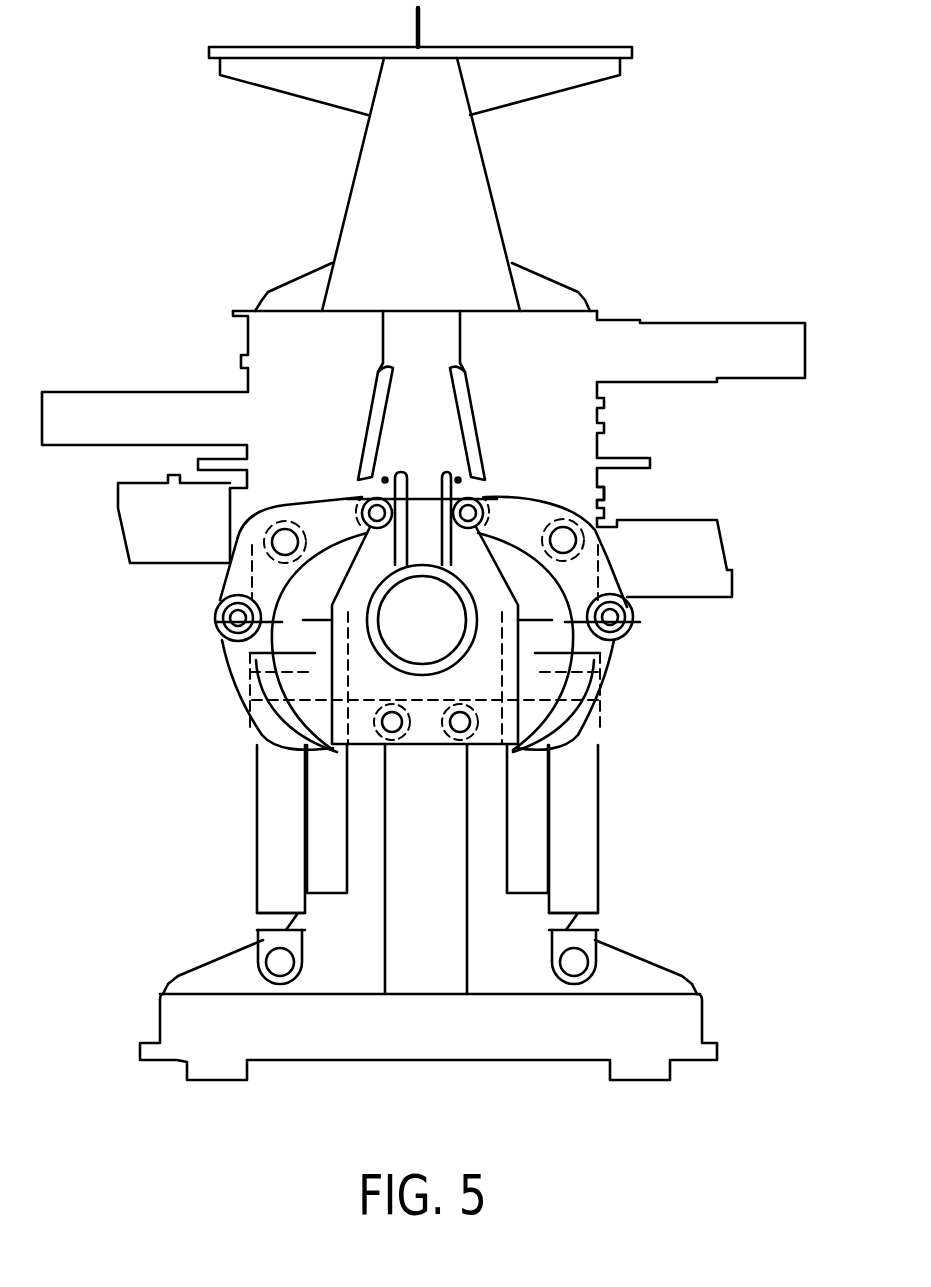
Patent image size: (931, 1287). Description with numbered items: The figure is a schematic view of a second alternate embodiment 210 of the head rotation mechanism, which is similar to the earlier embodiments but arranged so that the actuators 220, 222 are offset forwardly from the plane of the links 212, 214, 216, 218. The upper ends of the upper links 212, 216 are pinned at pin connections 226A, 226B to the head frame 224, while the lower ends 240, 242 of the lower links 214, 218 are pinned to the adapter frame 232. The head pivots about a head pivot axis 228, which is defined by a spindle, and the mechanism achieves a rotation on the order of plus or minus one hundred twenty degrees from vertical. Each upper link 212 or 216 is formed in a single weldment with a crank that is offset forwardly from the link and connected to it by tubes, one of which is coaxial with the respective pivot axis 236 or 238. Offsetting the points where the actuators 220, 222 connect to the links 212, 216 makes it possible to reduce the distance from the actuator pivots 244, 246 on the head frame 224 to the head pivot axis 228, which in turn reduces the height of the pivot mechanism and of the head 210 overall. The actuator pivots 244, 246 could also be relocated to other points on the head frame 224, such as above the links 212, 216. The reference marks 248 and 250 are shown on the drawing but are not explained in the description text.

The second alternate embodiment 210 is at (716, 214).
The link 212 is at (620, 563).
The link 214 is at (612, 683).
The link 216 is at (223, 585).
The link 218 is at (242, 682).
The actuator 220 is at (598, 850).
The actuator 222 is at (255, 850).
The head frame 224 is at (487, 1073).
The pin connection 226A is at (495, 495).
The pin connection 226B is at (365, 497).
The head pivot axis 228 is at (427, 622).
The adapter frame 232 is at (341, 557).
The pivot axis 236 is at (640, 622).
The pivot axis 238 is at (217, 626).
The lower end 240 is at (452, 740).
The lower end 242 is at (387, 747).
The pivot 244 is at (595, 948).
The pivot 246 is at (260, 948).
The housing lug 248 is at (607, 498).
The upper left pivot 250 is at (245, 523).